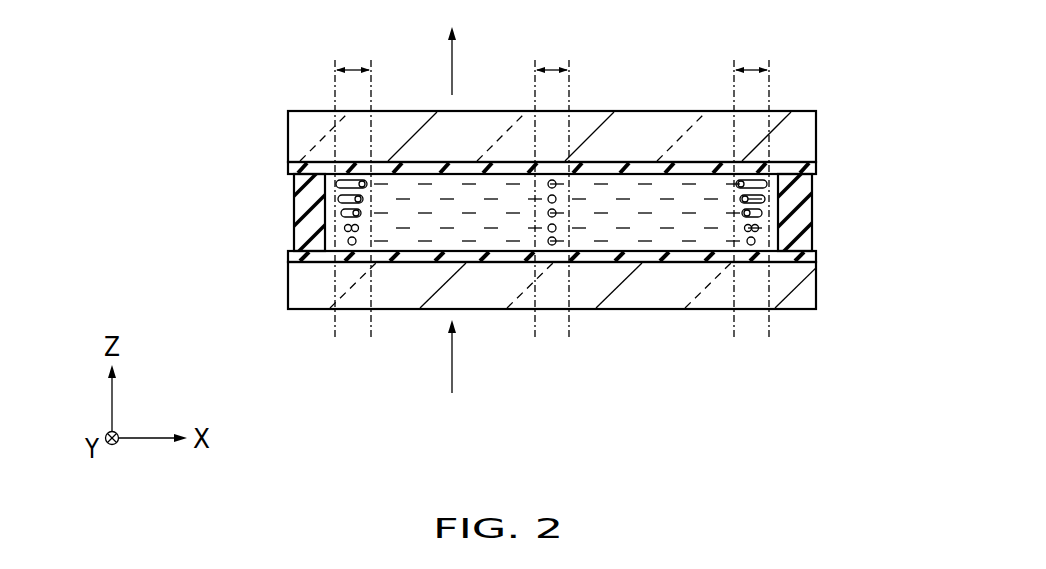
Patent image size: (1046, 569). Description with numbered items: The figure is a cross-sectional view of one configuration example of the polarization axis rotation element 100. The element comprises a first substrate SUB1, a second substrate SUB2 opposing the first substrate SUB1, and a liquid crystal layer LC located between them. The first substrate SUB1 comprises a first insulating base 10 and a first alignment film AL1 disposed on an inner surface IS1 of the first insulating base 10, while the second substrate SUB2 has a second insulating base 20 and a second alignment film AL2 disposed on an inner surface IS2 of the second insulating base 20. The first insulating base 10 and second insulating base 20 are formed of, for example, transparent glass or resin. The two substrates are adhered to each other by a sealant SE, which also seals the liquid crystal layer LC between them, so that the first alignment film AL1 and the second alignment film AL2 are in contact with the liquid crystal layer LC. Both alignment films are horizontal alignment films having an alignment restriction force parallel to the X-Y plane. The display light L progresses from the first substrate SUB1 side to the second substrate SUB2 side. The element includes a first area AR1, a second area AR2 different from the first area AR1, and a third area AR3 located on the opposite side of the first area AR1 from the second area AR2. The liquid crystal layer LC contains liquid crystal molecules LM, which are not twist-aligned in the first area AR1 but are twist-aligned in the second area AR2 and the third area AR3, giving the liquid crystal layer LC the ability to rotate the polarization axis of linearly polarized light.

The polarization axis rotation element 100 is at (808, 91).
The second substrate SUB2 is at (215, 115).
The second insulating base 20 is at (288, 138).
The second alignment film AL2 is at (288, 172).
The first substrate SUB1 is at (215, 235).
The first alignment film AL1 is at (290, 257).
The first insulating base 10 is at (290, 293).
The sealant SE is at (300, 212).
The liquid crystal layer LC is at (772, 228).
The liquid crystal molecules LM is at (766, 210).
The inner surface of the second insulating base IS2 is at (620, 170).
The inner surface of the first insulating base IS1 is at (620, 256).
The first area AR1 is at (551, 183).
The second area AR2 is at (353, 183).
The third area AR3 is at (751, 183).
The display light L is at (452, 213).